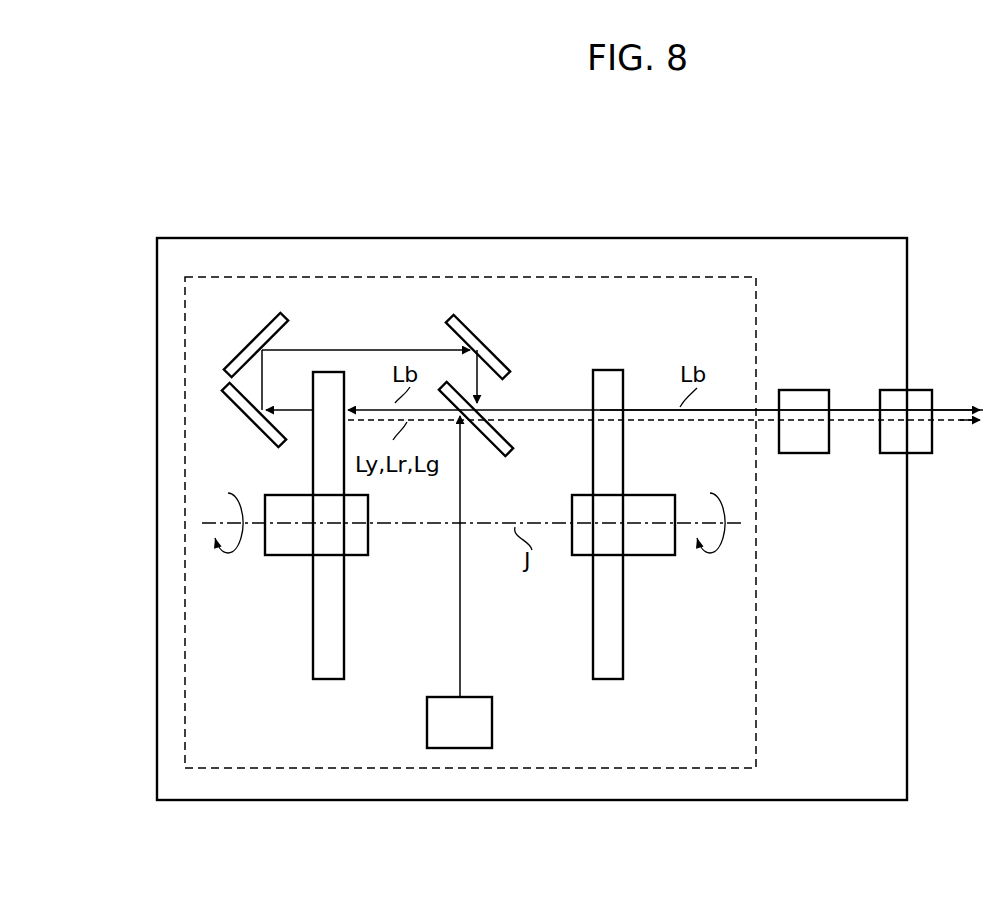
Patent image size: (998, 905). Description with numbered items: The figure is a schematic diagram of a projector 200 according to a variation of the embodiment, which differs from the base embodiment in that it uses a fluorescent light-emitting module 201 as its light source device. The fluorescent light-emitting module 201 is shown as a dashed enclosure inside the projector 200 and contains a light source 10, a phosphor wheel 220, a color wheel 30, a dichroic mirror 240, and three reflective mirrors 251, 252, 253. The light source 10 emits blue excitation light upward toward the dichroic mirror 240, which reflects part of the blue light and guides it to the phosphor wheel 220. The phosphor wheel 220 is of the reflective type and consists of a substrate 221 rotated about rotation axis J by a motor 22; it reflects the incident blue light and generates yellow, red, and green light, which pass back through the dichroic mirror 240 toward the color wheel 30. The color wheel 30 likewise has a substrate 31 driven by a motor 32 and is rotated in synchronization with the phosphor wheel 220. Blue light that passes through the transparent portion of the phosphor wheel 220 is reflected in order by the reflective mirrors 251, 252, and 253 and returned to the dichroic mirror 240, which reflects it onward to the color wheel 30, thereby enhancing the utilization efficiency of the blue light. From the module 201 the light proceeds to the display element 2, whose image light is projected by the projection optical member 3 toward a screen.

The projector 200 is at (855, 237).
The fluorescent light-emitting module 201 is at (715, 275).
The display element 2 is at (803, 390).
The projection optical member 3 is at (917, 390).
The light source 10 is at (473, 697).
The motor 22 is at (288, 550).
The substrate 221 is at (318, 625).
The phosphor wheel 220 is at (280, 525).
The color wheel 30 is at (651, 524).
The substrate 31 is at (612, 617).
The motor 32 is at (648, 550).
The dichroic mirror 240 is at (500, 462).
The reflective mirror 251 is at (260, 430).
The reflective mirror 252 is at (253, 337).
The reflective mirror 253 is at (502, 352).